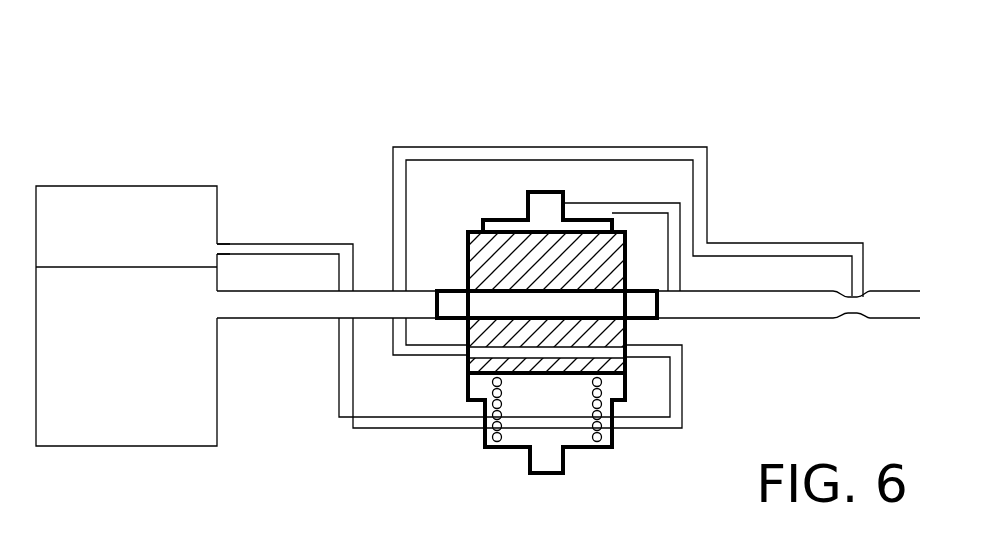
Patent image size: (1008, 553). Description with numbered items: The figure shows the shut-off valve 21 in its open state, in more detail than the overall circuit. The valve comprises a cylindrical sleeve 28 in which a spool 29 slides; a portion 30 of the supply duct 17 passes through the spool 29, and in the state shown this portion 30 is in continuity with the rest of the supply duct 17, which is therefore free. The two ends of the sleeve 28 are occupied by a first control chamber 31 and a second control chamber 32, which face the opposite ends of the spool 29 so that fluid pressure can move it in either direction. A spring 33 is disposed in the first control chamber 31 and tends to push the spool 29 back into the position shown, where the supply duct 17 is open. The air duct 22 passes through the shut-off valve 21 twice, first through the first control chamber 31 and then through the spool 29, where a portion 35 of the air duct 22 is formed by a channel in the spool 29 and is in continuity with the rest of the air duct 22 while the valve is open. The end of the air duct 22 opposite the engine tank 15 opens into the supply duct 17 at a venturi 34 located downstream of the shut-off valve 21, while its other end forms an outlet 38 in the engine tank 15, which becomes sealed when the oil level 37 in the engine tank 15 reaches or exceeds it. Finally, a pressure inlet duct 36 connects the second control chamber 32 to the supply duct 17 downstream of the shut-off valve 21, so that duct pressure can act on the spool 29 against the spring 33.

The engine tank 15 is at (127, 186).
The supply duct 17 is at (277, 321).
The shut-off valve 21 is at (577, 189).
The air duct 22 is at (385, 219).
The cylindrical sleeve 28 is at (465, 391).
The spool 29 is at (502, 262).
The portion of the supply duct 30 is at (565, 305).
The first control chamber 31 is at (523, 422).
The second control chamber 32 is at (548, 207).
The spring 33 is at (585, 417).
The venturi 34 is at (867, 318).
The portion of the air duct 35 is at (513, 352).
The pressure inlet duct 36 is at (673, 227).
The oil level 37 is at (148, 267).
The outlet of the air duct 38 is at (217, 251).